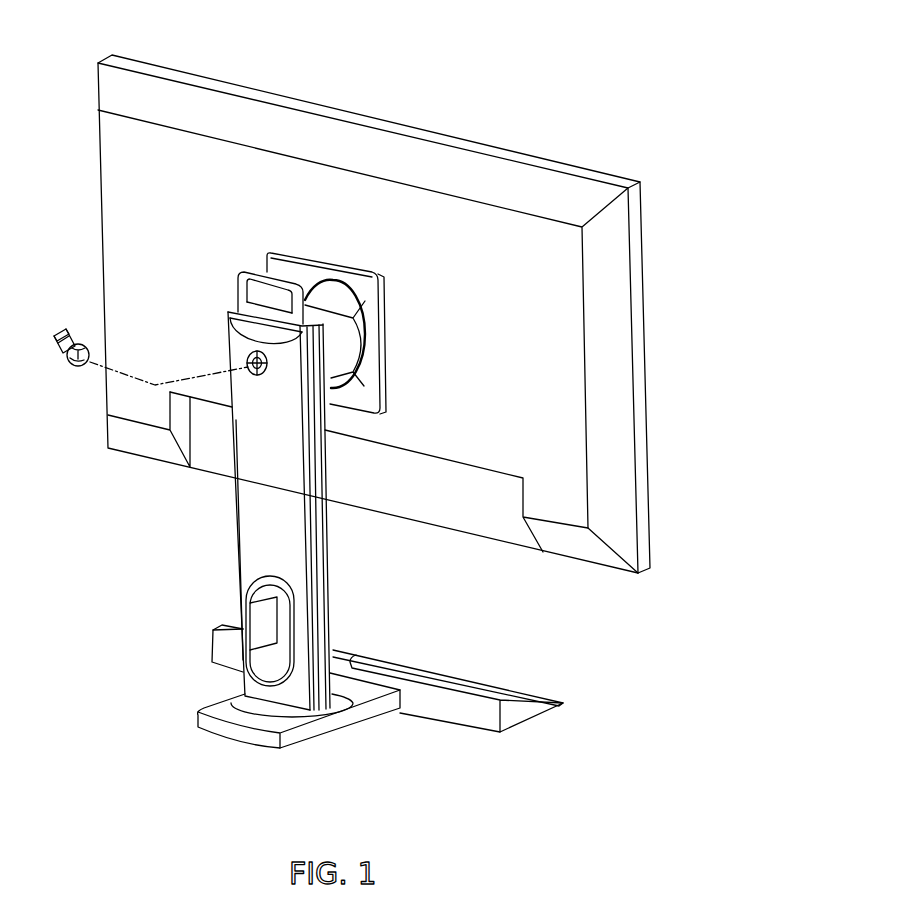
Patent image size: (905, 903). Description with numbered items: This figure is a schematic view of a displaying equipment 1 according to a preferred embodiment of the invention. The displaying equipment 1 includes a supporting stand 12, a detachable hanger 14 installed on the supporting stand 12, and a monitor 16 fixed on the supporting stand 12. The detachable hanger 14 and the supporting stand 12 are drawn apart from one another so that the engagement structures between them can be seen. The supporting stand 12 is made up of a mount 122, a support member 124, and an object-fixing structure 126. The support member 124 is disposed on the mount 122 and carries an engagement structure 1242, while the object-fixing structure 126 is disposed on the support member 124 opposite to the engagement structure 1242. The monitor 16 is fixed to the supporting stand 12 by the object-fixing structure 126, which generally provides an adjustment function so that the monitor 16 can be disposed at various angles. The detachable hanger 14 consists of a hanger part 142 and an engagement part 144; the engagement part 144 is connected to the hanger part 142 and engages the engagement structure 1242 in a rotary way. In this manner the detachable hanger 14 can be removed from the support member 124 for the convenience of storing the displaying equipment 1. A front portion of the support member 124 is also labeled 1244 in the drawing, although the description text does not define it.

The displaying equipment 1 is at (508, 68).
The supporting stand 12 is at (433, 353).
The mount 122 is at (404, 666).
The support member 124 is at (287, 494).
The engagement structure 1242 is at (259, 377).
The column cover 1244 is at (255, 542).
The object-fixing structure 126 is at (381, 341).
The detachable hanger 14 is at (135, 395).
The hanger part 142 is at (62, 349).
The engagement part 144 is at (88, 368).
The monitor 16 is at (583, 553).